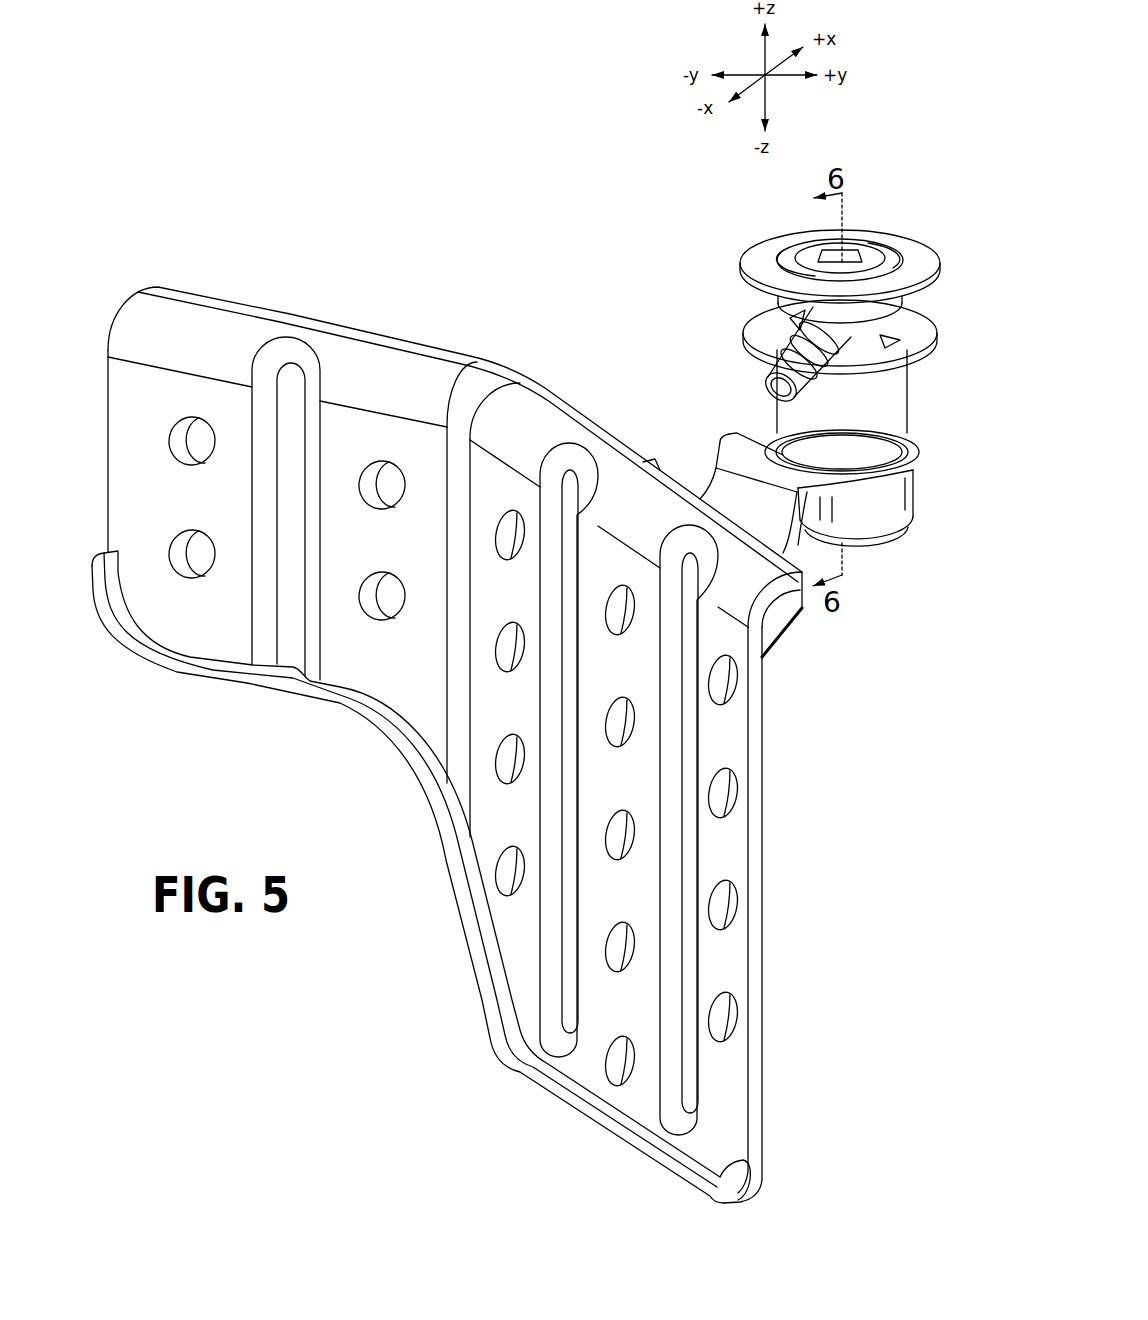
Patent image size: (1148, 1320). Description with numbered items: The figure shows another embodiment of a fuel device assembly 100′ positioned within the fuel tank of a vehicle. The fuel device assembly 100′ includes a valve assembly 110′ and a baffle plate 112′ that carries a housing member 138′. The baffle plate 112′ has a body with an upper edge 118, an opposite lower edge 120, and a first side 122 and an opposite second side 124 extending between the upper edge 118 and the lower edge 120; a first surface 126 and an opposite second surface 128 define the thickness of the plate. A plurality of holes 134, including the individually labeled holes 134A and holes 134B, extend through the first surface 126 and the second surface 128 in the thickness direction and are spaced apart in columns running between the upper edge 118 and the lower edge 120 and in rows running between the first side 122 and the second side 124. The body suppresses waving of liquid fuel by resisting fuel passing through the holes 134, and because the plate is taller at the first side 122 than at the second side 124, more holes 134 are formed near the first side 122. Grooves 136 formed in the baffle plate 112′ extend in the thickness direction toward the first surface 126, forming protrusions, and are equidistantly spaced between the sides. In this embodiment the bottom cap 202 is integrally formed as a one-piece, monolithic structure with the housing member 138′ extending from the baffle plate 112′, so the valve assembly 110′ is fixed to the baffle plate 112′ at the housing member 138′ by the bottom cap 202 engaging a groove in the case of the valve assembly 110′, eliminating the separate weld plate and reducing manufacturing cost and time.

The fuel device assembly 100′ is at (369, 170).
The valve assembly 110′ is at (927, 379).
The baffle plate 112′ is at (790, 811).
The upper edge 118 is at (390, 338).
The lower edge 120 is at (584, 1080).
The first side 122 is at (762, 720).
The second side 124 is at (106, 429).
The first surface 126 is at (764, 965).
The second surface 128 is at (724, 1076).
The holes 134 is at (453, 741).
The first mounting holes 134A is at (634, 966).
The second mounting holes 134B is at (213, 537).
The grooves 136 is at (300, 340).
The housing member 138′ is at (931, 513).
The bottom cap 202 is at (891, 545).